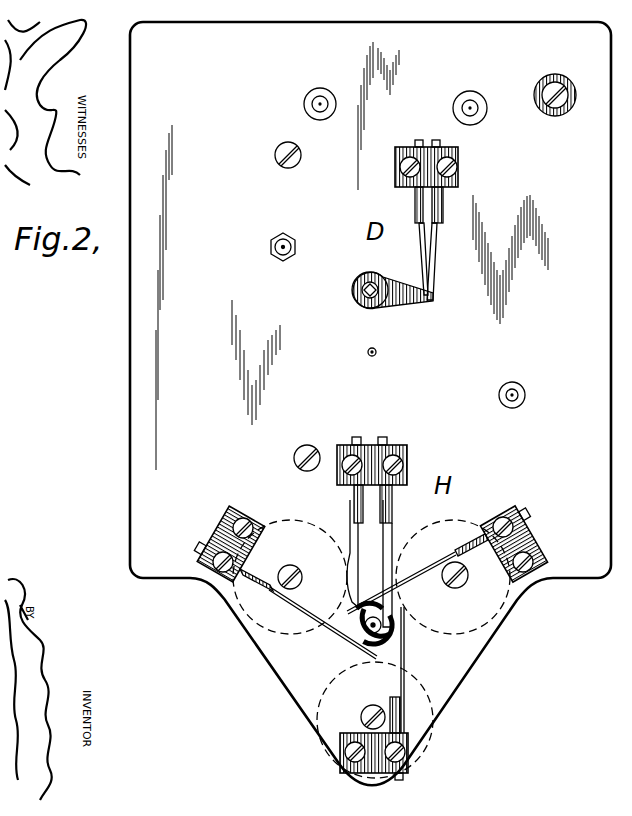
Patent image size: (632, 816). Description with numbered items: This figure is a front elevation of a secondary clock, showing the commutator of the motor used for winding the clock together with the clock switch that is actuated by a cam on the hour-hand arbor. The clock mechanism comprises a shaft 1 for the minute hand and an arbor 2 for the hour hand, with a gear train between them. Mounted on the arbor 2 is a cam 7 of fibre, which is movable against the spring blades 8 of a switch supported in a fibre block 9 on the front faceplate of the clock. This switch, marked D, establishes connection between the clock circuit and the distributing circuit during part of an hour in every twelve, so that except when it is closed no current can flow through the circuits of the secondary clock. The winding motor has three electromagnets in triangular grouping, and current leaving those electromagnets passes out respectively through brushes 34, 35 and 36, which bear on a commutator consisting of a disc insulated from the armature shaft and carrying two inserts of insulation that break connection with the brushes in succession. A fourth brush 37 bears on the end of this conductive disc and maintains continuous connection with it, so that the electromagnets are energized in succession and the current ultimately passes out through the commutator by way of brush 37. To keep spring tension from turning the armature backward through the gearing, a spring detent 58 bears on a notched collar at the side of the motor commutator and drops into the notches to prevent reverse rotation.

The shaft 1 is at (378, 285).
The arbor 2 is at (352, 285).
The cam 7 is at (400, 307).
The spring blades 8 is at (430, 262).
The fibre block 9 is at (460, 155).
The brush 34 is at (430, 568).
The brush 35 is at (405, 660).
The brush 36 is at (303, 618).
The fourth brush 37 is at (392, 537).
The spring detent 58 is at (349, 581).